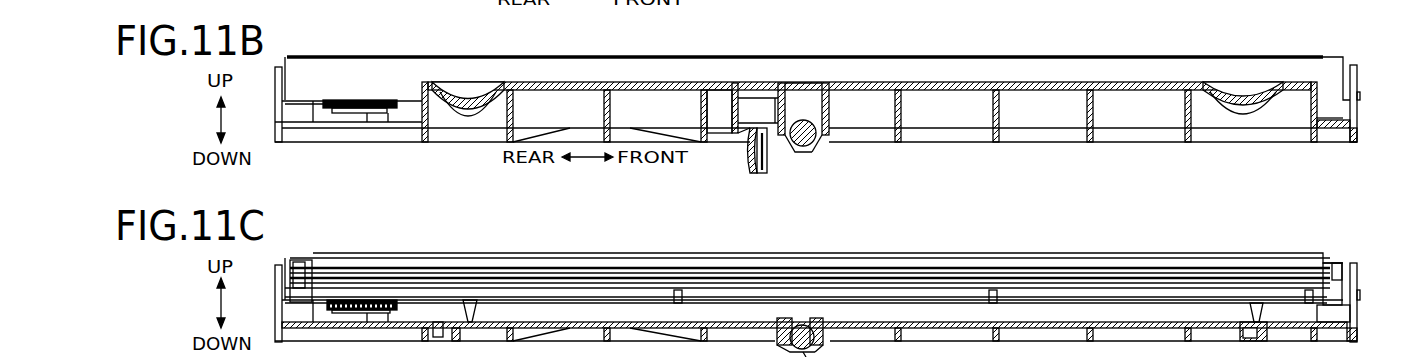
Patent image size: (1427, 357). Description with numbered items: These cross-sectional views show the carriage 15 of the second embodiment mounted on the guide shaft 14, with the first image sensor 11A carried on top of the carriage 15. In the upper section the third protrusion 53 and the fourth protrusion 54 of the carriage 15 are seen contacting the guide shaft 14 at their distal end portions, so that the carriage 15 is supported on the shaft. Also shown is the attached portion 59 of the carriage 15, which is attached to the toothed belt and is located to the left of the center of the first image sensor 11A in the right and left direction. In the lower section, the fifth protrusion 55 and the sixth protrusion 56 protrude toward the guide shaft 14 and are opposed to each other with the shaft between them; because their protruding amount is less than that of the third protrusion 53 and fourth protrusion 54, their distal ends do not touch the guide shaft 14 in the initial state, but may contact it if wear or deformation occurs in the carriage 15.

In FIG. 11B, the first image sensor 11A is at (436, 72).
In FIG. 11C, the first image sensor 11A is at (436, 263).
In FIG. 11B, the carriage 15 is at (398, 137).
In FIG. 11C, the carriage 15 is at (398, 333).
In FIG. 11B, the fourth protrusion 54 is at (790, 120).
In FIG. 11B, the third protrusion 53 is at (810, 120).
In FIG. 11B, the guide shaft 14 is at (803, 150).
In FIG. 11B, the attached portion 59 is at (750, 162).
In FIG. 11C, the sixth protrusion 56 is at (795, 323).
In FIG. 11C, the fifth protrusion 55 is at (810, 323).